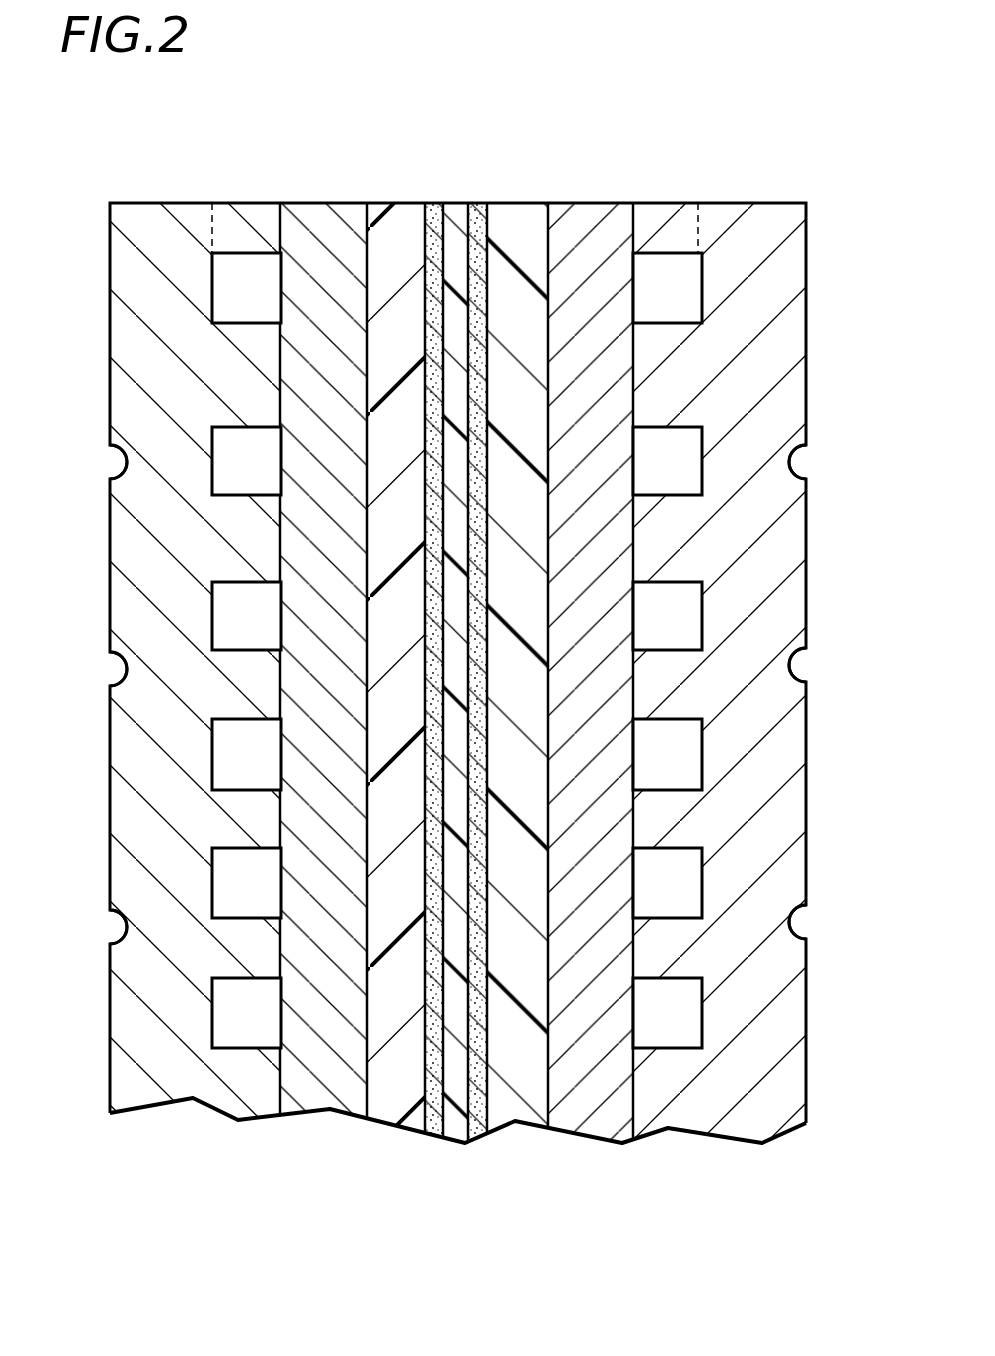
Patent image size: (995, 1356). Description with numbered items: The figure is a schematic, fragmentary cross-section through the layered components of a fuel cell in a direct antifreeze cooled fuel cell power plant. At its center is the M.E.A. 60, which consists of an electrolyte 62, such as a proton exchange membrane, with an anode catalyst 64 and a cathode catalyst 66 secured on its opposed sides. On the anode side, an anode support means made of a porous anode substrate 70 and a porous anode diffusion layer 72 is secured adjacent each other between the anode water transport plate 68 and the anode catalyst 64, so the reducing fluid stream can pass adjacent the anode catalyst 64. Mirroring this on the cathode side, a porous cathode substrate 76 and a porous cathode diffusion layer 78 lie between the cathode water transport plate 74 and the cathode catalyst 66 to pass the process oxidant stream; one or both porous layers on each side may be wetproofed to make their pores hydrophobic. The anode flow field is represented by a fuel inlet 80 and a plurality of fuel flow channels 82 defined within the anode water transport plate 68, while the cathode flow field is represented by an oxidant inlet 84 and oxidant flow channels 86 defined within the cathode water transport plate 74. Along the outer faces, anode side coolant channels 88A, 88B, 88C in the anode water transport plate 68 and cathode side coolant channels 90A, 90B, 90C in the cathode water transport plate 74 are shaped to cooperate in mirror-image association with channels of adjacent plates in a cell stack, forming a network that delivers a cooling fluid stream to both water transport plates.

The M.E.A. 60 is at (487, 192).
The electrolyte 62 is at (457, 1137).
The anode catalyst 64 is at (441, 1133).
The cathode catalyst 66 is at (480, 1130).
The anode water transport plate 68 is at (215, 1095).
The porous anode substrate 70 is at (313, 1102).
The porous anode diffusion layer 72 is at (395, 1110).
The cathode water transport plate 74 is at (717, 1115).
The porous cathode substrate 76 is at (603, 1118).
The porous cathode diffusion layer 78 is at (523, 1115).
The fuel inlet 80 is at (240, 235).
The fuel flow channels 82 is at (242, 452).
The oxidant inlet 84 is at (684, 232).
The oxidant flow channels 86 is at (680, 450).
The anode side coolant channel 88A is at (122, 468).
The anode side coolant channel 88B is at (123, 674).
The anode side coolant channel 88C is at (123, 930).
The cathode side coolant channel 90A is at (795, 462).
The cathode side coolant channel 90B is at (798, 664).
The cathode side coolant channel 90C is at (798, 923).